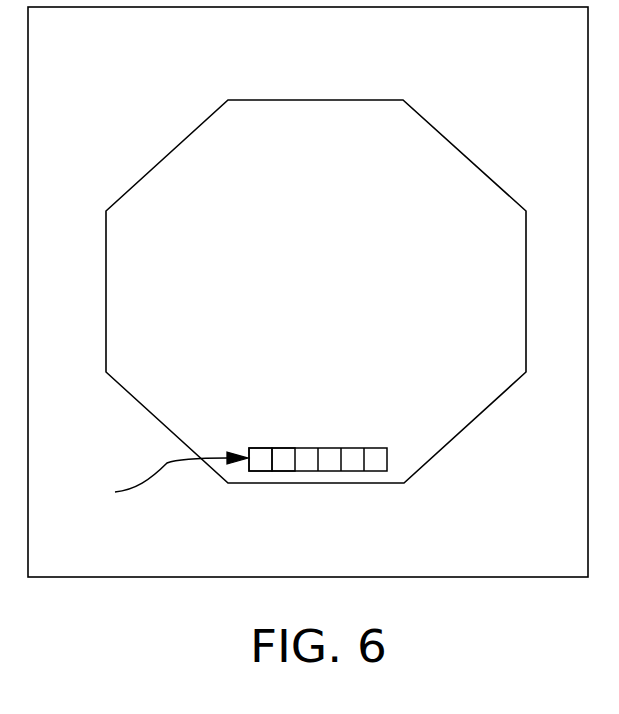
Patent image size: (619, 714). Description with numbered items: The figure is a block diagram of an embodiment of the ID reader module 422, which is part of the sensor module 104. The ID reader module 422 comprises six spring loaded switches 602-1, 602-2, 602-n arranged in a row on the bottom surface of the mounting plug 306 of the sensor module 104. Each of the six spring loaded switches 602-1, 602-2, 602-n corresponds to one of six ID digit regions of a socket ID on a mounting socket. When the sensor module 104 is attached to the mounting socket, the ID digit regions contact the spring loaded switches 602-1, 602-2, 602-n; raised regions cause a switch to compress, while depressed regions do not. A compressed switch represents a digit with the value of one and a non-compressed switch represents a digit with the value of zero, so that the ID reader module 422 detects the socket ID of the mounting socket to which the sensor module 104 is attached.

The sensor module 104 is at (256, 566).
The mounting plug 306 is at (404, 484).
The ID reader module 422 is at (157, 480).
The spring loaded switch 602-1 is at (263, 448).
The spring loaded switch 602-2 is at (285, 448).
The spring loaded switches 602-n is at (373, 448).